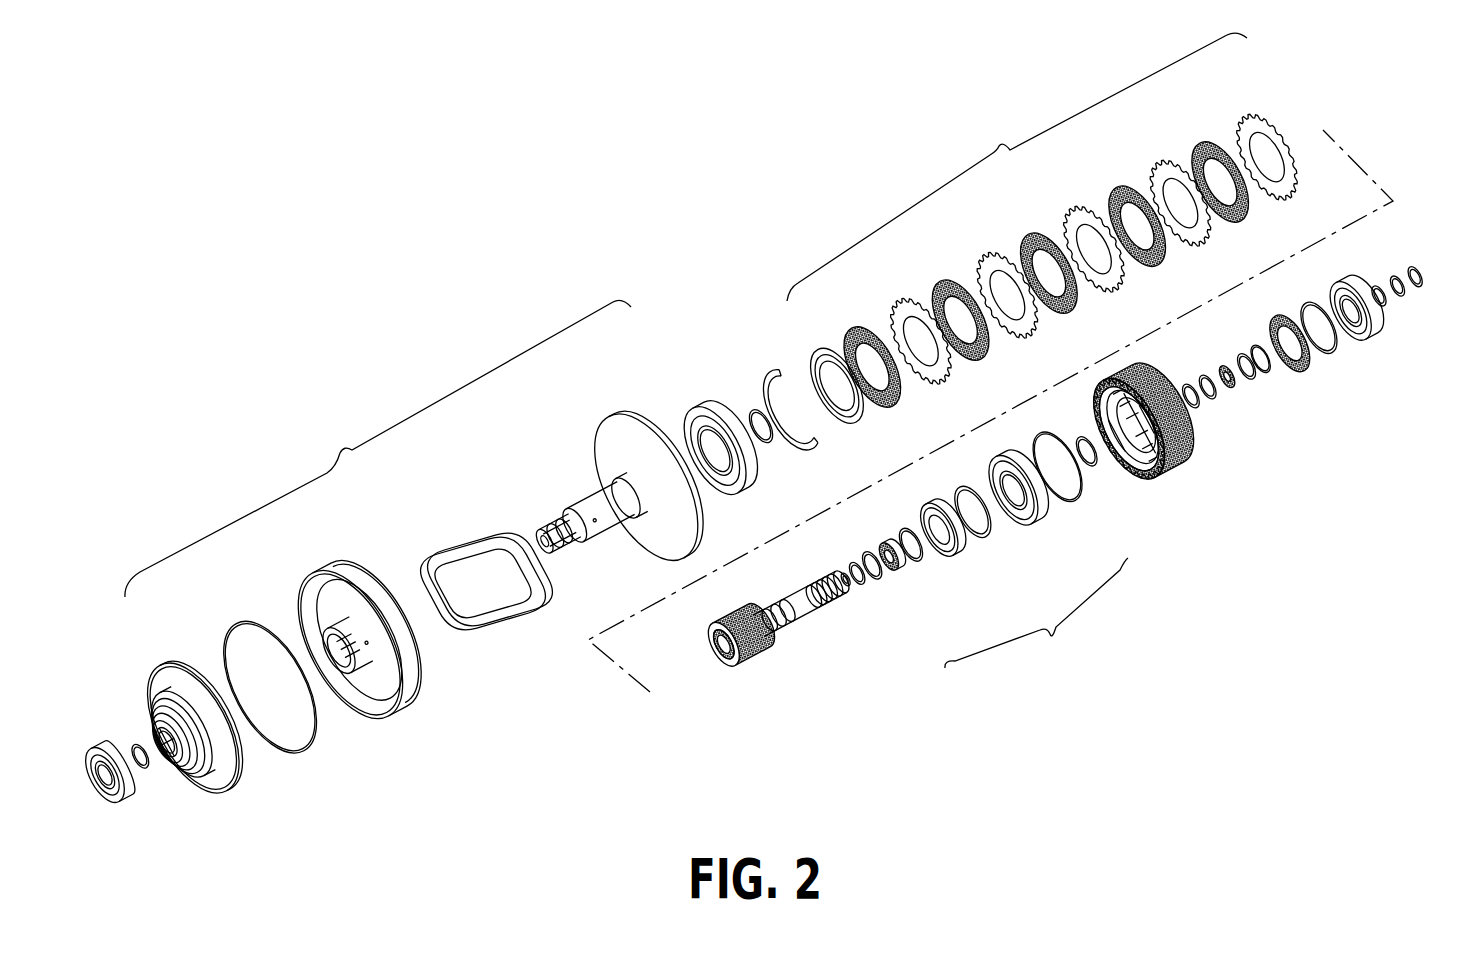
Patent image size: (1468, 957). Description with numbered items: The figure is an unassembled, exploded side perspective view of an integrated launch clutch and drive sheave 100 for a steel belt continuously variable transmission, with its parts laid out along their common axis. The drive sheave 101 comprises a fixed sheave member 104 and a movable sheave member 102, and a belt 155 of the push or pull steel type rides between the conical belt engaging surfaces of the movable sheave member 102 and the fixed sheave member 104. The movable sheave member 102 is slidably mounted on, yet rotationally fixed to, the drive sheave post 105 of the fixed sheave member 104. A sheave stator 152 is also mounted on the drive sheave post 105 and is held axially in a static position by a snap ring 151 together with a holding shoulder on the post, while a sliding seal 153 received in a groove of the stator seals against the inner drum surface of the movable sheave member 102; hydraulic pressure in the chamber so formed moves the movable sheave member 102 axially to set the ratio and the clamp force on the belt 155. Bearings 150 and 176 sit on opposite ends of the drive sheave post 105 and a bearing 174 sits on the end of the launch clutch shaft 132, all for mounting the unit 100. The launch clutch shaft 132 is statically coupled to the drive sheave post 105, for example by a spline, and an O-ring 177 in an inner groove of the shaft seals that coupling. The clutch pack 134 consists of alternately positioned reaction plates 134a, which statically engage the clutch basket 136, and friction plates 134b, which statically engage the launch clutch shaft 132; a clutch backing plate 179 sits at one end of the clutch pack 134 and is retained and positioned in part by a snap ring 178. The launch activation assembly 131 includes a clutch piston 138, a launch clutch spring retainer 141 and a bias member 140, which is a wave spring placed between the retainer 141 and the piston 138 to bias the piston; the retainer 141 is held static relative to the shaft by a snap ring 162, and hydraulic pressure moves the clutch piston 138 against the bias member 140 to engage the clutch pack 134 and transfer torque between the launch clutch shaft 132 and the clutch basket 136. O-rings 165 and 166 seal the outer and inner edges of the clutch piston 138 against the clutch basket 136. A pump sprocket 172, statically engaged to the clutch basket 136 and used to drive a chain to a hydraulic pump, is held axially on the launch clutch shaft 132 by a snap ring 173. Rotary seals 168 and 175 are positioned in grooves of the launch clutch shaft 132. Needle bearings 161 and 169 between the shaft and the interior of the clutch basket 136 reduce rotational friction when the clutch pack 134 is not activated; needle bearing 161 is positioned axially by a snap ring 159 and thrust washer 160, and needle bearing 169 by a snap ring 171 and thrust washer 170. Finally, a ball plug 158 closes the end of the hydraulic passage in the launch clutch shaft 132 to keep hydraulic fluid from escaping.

The integrated launch clutch and drive sheave 100 is at (578, 205).
The drive sheave 101 is at (378, 448).
The movable sheave member 102 is at (350, 580).
The fixed sheave member 104 is at (634, 443).
The drive sheave post 105 is at (612, 518).
The launch activation assembly 131 is at (1036, 613).
The launch clutch shaft 132 is at (742, 660).
The clutch pack 134 is at (1017, 167).
The reaction plates 134a is at (1253, 124).
The friction plates 134b is at (1245, 241).
The clutch basket 136 is at (1163, 472).
The clutch piston 138 is at (1022, 525).
The bias member 140 is at (998, 536).
The launch clutch spring retainer 141 is at (932, 558).
The bearing 150 is at (112, 752).
The snap ring 151 is at (148, 772).
The sheave stator 152 is at (160, 677).
The sliding seal 153 is at (306, 752).
The belt 155 is at (445, 545).
The ball plug 158 is at (840, 578).
The snap ring 159 is at (860, 588).
The thrust washer 160 is at (863, 556).
The needle bearing 161 is at (898, 570).
The snap ring 162 is at (900, 527).
The O-ring 165 is at (1078, 500).
The O-ring 166 is at (1086, 438).
The rotary seals 168 is at (1190, 380).
The needle bearing 169 is at (1222, 363).
The thrust washer 170 is at (1256, 382).
The snap ring 171 is at (1270, 378).
The pump sprocket 172 is at (1287, 312).
The snap ring 173 is at (1328, 352).
The bearing 174 is at (1340, 282).
The rotary seals 175 is at (1418, 288).
The bearing 176 is at (718, 407).
The O-ring 177 is at (781, 460).
The snap ring 178 is at (768, 368).
The clutch backing plate 179 is at (863, 437).